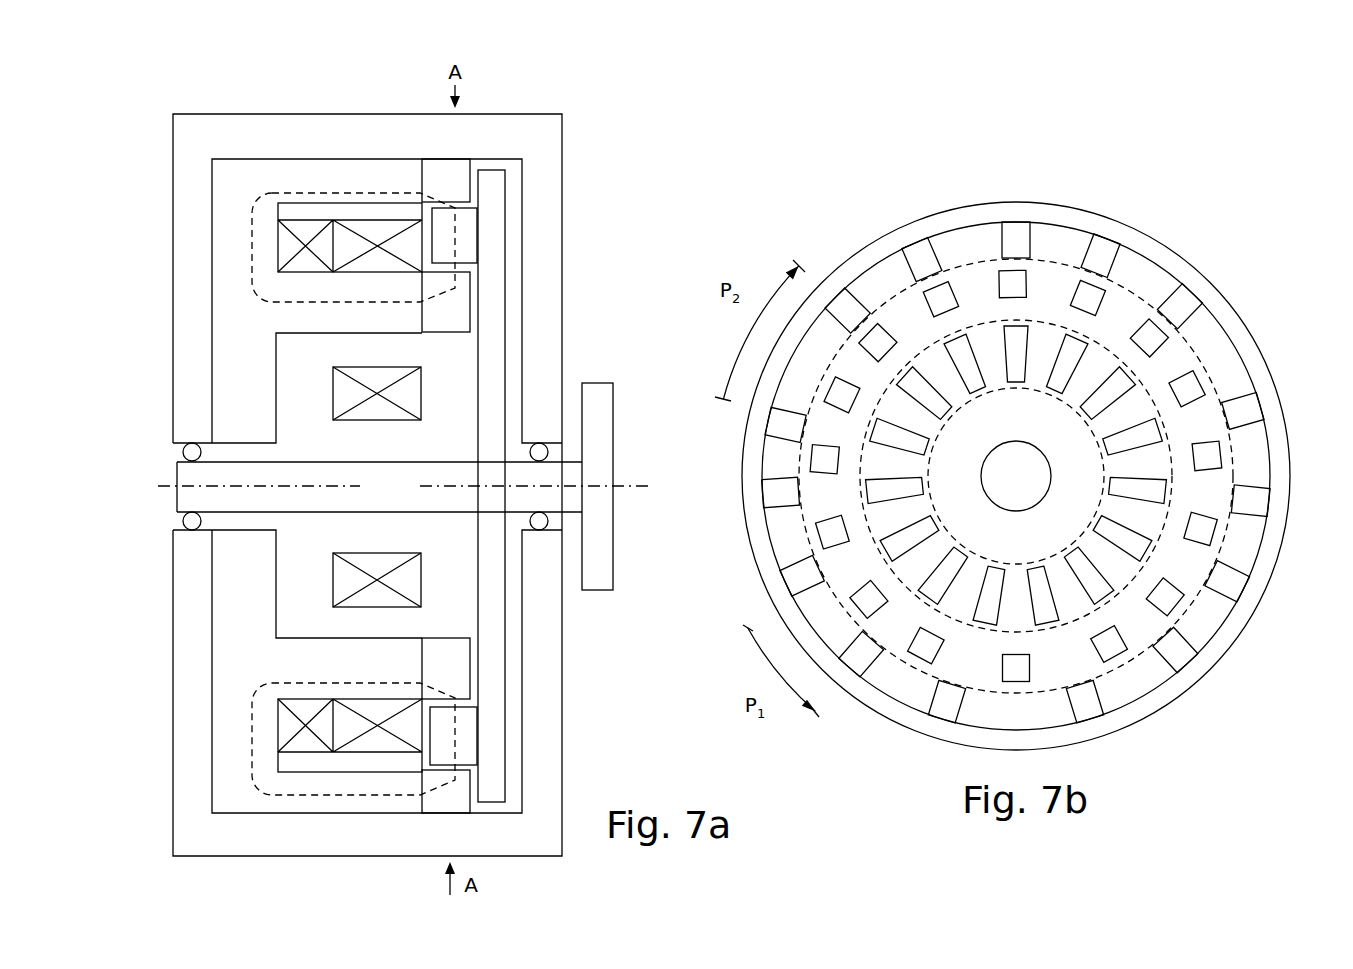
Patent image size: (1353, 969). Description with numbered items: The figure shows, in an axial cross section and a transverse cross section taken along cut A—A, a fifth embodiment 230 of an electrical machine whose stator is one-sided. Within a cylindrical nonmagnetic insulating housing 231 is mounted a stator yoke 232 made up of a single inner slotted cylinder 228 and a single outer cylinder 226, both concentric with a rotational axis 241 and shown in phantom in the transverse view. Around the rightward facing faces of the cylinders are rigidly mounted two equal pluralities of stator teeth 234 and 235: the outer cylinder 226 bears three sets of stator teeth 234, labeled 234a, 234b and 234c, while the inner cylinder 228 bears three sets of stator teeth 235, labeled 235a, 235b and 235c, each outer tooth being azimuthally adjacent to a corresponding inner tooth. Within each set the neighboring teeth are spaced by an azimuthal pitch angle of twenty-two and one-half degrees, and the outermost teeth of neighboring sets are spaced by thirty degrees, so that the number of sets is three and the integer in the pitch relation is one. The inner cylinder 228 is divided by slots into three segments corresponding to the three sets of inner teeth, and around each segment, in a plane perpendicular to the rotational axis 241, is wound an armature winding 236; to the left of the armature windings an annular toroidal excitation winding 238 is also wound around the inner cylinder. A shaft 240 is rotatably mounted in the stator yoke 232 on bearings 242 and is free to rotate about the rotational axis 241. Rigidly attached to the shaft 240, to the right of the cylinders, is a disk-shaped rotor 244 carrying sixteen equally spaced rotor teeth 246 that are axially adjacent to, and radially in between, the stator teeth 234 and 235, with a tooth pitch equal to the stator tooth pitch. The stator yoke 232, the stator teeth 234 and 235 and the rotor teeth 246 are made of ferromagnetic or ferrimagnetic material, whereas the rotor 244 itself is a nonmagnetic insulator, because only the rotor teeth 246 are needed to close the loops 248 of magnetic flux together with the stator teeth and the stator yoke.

In FIG. 7A, the outer cylinder 226 is at (312, 186).
In FIG. 7B, the outer cylinder 226 is at (793, 373).
In FIG. 7A, the inner slotted cylinder 228 is at (294, 297).
In FIG. 7B, the inner slotted cylinder 228 is at (891, 430).
In FIG. 7A, the fifth embodiment 230 is at (603, 140).
In FIG. 7B, the fifth embodiment 230 is at (1235, 142).
In FIG. 7A, the housing 231 is at (238, 132).
In FIG. 7B, the housing 231 is at (1170, 258).
In FIG. 7A, the stator yoke 232 is at (222, 186).
In FIG. 7A, the stator teeth 234 is at (430, 186).
In FIG. 7B, the stator teeth set a 234a is at (840, 302).
In FIG. 7B, the stator teeth set b 234b is at (1256, 490).
In FIG. 7B, the stator teeth set c 234c is at (780, 492).
In FIG. 7A, the stator teeth 235 is at (430, 323).
In FIG. 7B, the stator teeth set a 235a is at (1056, 393).
In FIG. 7B, the stator teeth set b 235b is at (1106, 451).
In FIG. 7B, the stator teeth set c 235c is at (931, 451).
In FIG. 7A, the armature winding 236 is at (367, 233).
In FIG. 7A, the excitation winding 238 is at (287, 252).
In FIG. 7A, the shaft 240 is at (373, 496).
In FIG. 7B, the shaft 240 is at (999, 488).
In FIG. 7A, the rotational axis 241 is at (628, 483).
In FIG. 7A, the bearings 242 is at (548, 452).
In FIG. 7A, the rotor 244 is at (487, 295).
In FIG. 7A, the rotor teeth 246 is at (437, 247).
In FIG. 7B, the rotor teeth 246 is at (946, 303).
In FIG. 7A, the loops of magnetic flux 248 is at (260, 293).